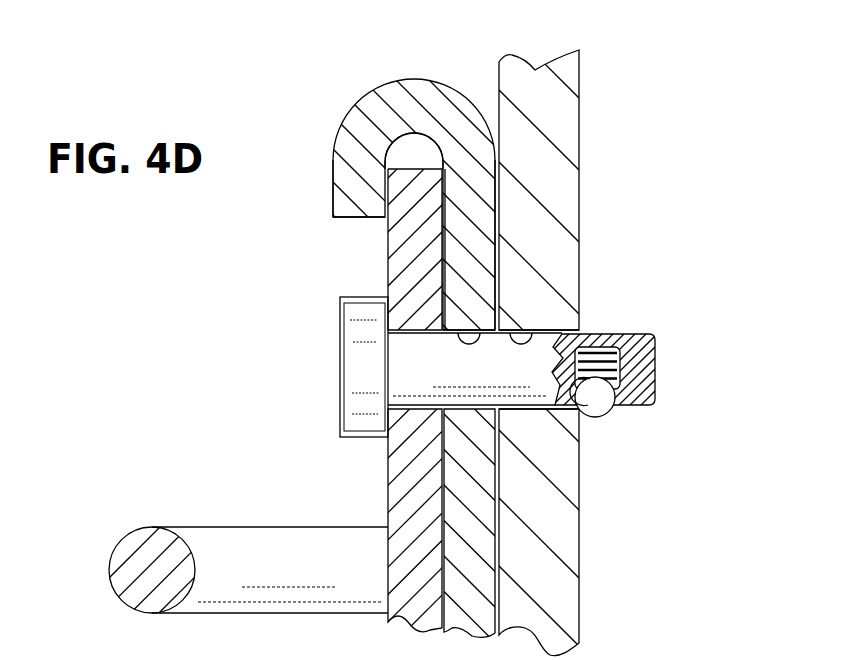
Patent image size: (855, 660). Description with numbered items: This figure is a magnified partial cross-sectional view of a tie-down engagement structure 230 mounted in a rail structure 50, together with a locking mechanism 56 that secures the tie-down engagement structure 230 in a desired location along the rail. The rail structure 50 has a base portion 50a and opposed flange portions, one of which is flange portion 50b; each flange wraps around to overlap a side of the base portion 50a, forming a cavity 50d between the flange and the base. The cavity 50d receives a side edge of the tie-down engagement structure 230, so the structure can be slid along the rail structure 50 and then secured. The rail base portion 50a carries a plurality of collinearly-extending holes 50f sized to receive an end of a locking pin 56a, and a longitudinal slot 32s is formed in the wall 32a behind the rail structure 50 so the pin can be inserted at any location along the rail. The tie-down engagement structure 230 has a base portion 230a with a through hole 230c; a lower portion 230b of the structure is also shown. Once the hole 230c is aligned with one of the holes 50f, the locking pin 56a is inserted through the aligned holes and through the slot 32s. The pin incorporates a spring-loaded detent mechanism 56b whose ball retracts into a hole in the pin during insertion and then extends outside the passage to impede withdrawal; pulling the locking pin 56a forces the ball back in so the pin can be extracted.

The rail structure 50 is at (381, 83).
The base portion 50a is at (465, 240).
The flange portion 50b is at (362, 153).
The cavity 50d is at (415, 152).
The holes 50f is at (487, 328).
The wall 32a is at (553, 120).
The longitudinal slot 32s is at (545, 322).
The tie-down engagement structure 230 is at (388, 270).
The base portion 230a is at (407, 502).
The shaft cross rod 230b is at (125, 541).
The through hole 230c is at (420, 390).
The locking mechanism 56 is at (340, 335).
The locking pin 56a is at (417, 368).
The spring-loaded detent mechanism 56b is at (598, 407).